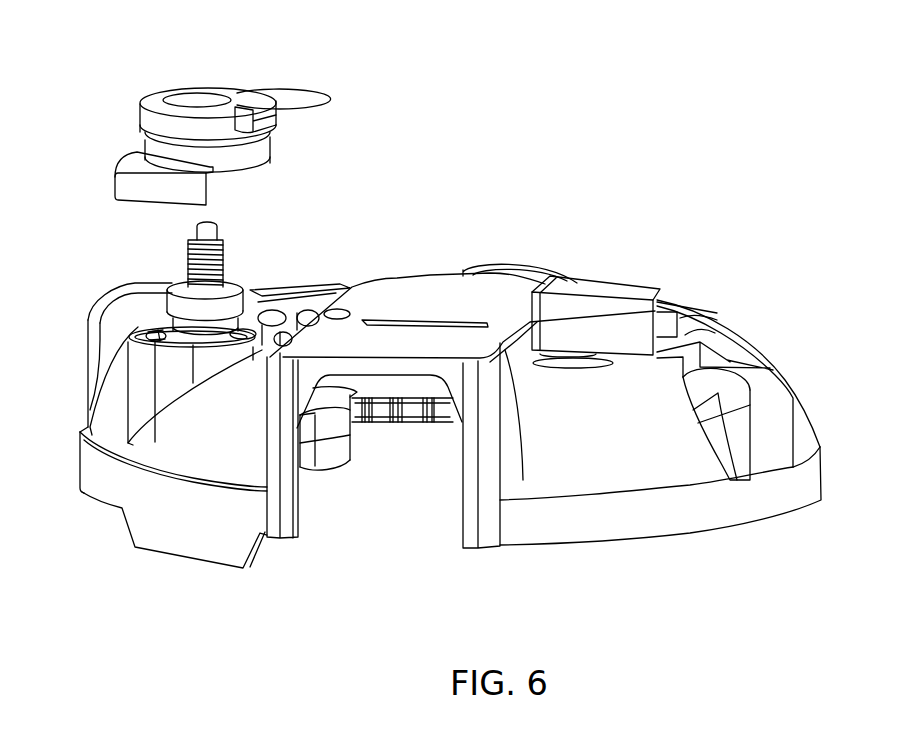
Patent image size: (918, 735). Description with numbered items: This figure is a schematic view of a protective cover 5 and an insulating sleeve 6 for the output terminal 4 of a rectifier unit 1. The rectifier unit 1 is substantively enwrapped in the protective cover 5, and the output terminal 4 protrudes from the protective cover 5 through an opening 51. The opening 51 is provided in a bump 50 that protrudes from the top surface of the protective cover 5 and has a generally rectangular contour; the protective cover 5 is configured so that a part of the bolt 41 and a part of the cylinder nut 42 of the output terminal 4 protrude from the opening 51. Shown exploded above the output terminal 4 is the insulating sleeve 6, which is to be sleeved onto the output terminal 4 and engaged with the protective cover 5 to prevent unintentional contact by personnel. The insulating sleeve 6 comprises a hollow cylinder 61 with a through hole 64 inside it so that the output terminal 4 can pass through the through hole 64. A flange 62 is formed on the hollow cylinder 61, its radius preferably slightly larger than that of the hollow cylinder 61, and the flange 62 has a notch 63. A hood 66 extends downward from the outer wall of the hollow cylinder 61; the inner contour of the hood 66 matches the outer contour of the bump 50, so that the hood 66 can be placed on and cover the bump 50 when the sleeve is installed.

The rectifier unit 1 is at (393, 427).
The output terminal 4 is at (242, 255).
The protective cover 5 is at (423, 426).
The insulating sleeve 6 is at (247, 90).
The bolt 41 is at (208, 233).
The cylinder nut 42 is at (224, 301).
The bump 50 is at (138, 364).
The opening 51 is at (158, 337).
The hollow cylinder 61 is at (258, 157).
The flange 62 is at (153, 127).
The notch 63 is at (274, 113).
The through hole 64 is at (203, 97).
The hood 66 is at (152, 190).